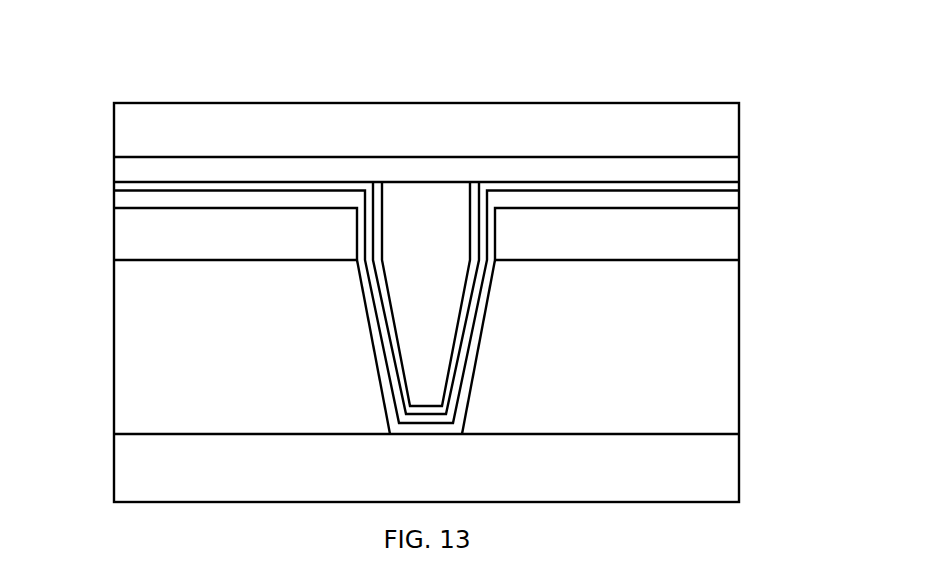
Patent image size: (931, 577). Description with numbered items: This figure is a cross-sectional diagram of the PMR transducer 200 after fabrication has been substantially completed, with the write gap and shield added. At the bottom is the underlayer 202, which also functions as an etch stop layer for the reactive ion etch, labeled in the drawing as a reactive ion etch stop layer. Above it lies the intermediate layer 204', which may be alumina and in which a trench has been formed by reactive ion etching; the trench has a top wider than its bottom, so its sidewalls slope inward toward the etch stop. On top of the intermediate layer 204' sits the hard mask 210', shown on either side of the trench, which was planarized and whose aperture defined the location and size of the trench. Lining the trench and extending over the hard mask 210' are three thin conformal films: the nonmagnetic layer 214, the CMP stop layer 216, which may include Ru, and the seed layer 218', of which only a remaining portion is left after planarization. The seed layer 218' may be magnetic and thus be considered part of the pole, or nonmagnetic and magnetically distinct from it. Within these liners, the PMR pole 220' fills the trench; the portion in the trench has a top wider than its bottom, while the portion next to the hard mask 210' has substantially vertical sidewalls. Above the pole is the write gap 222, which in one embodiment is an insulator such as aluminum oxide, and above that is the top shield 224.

The PMR transducer 200 is at (405, 48).
The underlayer 202 is at (739, 453).
The intermediate layer 204' is at (426, 347).
The hard mask 210' is at (426, 227).
The nonmagnetic layer 214 is at (739, 198).
The CMP stop layer 216 is at (114, 187).
The seed layer 218' is at (490, 238).
The PMR pole 220' is at (394, 186).
The write gap 222 is at (270, 157).
The top shield 224 is at (114, 122).